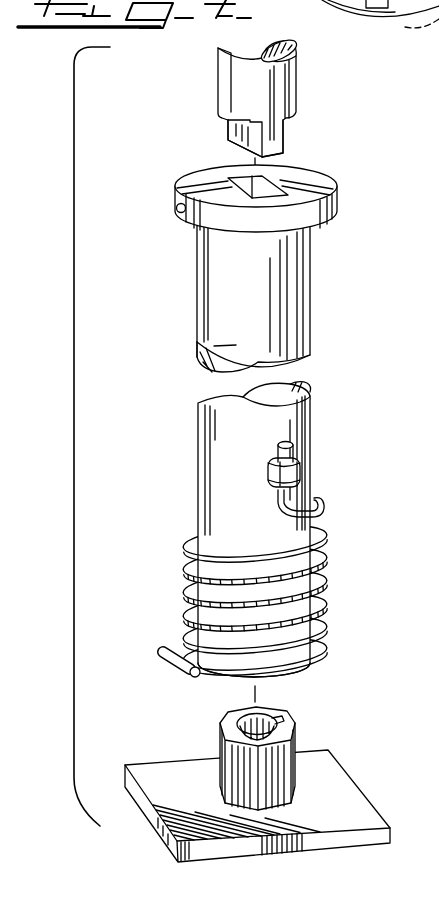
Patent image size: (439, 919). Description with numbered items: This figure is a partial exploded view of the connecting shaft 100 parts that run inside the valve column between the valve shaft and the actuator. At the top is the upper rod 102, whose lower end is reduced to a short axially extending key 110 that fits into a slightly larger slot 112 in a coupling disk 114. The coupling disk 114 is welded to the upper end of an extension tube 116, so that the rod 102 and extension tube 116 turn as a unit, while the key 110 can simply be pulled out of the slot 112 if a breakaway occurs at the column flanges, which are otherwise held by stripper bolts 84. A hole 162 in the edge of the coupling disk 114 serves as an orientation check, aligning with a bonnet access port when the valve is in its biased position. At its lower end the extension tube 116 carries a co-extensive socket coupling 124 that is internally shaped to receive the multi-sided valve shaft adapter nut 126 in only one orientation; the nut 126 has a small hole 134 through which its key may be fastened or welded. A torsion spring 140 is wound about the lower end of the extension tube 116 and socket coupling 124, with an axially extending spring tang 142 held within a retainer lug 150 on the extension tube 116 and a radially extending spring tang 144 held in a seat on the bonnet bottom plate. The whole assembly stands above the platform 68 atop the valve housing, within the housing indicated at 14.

The housing 14 is at (434, 792).
The platform 68 is at (167, 846).
The stripper bolts 84 is at (390, 12).
The connecting shaft 100 is at (191, 302).
The upper rod 102 is at (296, 84).
The key 110 is at (275, 143).
The slot 112 is at (240, 183).
The coupling disk 114 is at (315, 182).
The extension tube 116 is at (312, 293).
The socket coupling 124 is at (310, 663).
The valve shaft adapter nut 126 is at (262, 706).
The hole 134 is at (296, 745).
The torsion spring 140 is at (289, 531).
The axially extending spring tang 142 is at (294, 444).
The radially extending spring tang 144 is at (160, 652).
The retainer lug 150 is at (298, 470).
The hole 162 is at (176, 208).